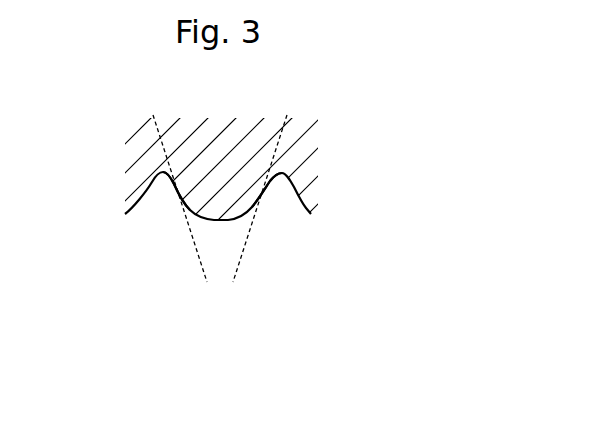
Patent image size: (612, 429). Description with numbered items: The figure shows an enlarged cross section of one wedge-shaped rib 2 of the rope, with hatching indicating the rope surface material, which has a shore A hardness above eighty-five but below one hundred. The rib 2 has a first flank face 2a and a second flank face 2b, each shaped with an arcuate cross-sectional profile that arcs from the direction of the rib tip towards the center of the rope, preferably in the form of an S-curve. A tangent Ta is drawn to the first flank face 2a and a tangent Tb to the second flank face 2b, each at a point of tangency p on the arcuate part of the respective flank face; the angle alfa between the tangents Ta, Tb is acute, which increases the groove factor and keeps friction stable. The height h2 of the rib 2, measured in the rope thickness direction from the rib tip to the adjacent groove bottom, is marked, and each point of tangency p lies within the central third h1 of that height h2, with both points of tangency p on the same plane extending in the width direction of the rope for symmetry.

The wedge-shaped rib 2 is at (228, 181).
The first flank face 2a is at (186, 205).
The second flank face 2b is at (257, 205).
The point of tangency p is at (178, 193).
The tangent Ta is at (204, 271).
The tangent Tb is at (238, 271).
The central third of the height h1 is at (266, 188).
The height of the rib h2 is at (278, 176).